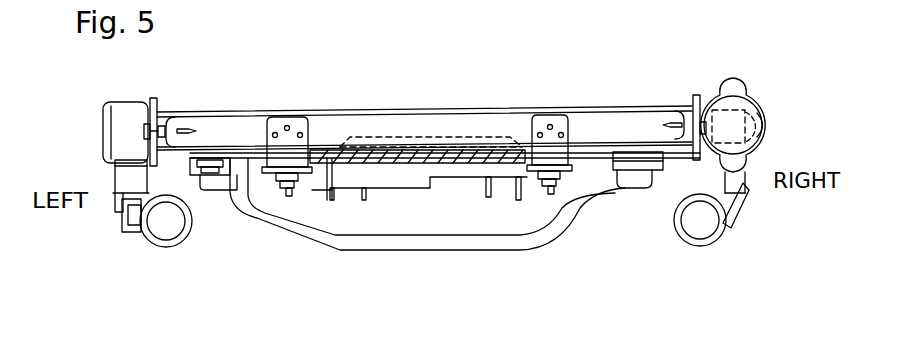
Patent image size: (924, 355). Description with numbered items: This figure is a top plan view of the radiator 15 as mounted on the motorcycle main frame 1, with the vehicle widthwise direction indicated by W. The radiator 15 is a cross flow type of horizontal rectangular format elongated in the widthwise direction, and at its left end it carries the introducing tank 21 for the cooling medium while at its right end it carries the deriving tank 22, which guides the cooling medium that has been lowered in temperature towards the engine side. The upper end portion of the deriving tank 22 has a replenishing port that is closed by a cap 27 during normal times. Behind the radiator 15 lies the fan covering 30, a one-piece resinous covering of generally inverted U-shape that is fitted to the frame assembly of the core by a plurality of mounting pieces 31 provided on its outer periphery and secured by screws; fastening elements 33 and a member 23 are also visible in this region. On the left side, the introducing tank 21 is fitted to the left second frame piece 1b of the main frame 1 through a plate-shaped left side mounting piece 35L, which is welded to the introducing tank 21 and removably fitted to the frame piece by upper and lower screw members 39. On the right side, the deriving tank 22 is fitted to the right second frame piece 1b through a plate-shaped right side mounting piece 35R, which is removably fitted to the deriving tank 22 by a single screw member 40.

The main frame 1 is at (688, 244).
The second frame piece 1b is at (433, 267).
The radiator 15 is at (351, 108).
The introducing tank 21 is at (135, 102).
The deriving tank 22 is at (703, 99).
The hidden member 23 is at (437, 120).
The cap 27 is at (748, 108).
The fan covering 30 is at (352, 245).
The mounting piece 31 is at (278, 122).
The fastening nut 33 is at (288, 196).
The left side mounting piece 35L is at (121, 222).
The right side mounting piece 35R is at (745, 189).
The screw member 39 is at (118, 212).
The screw member 40 is at (767, 112).
The width direction W is at (421, 62).